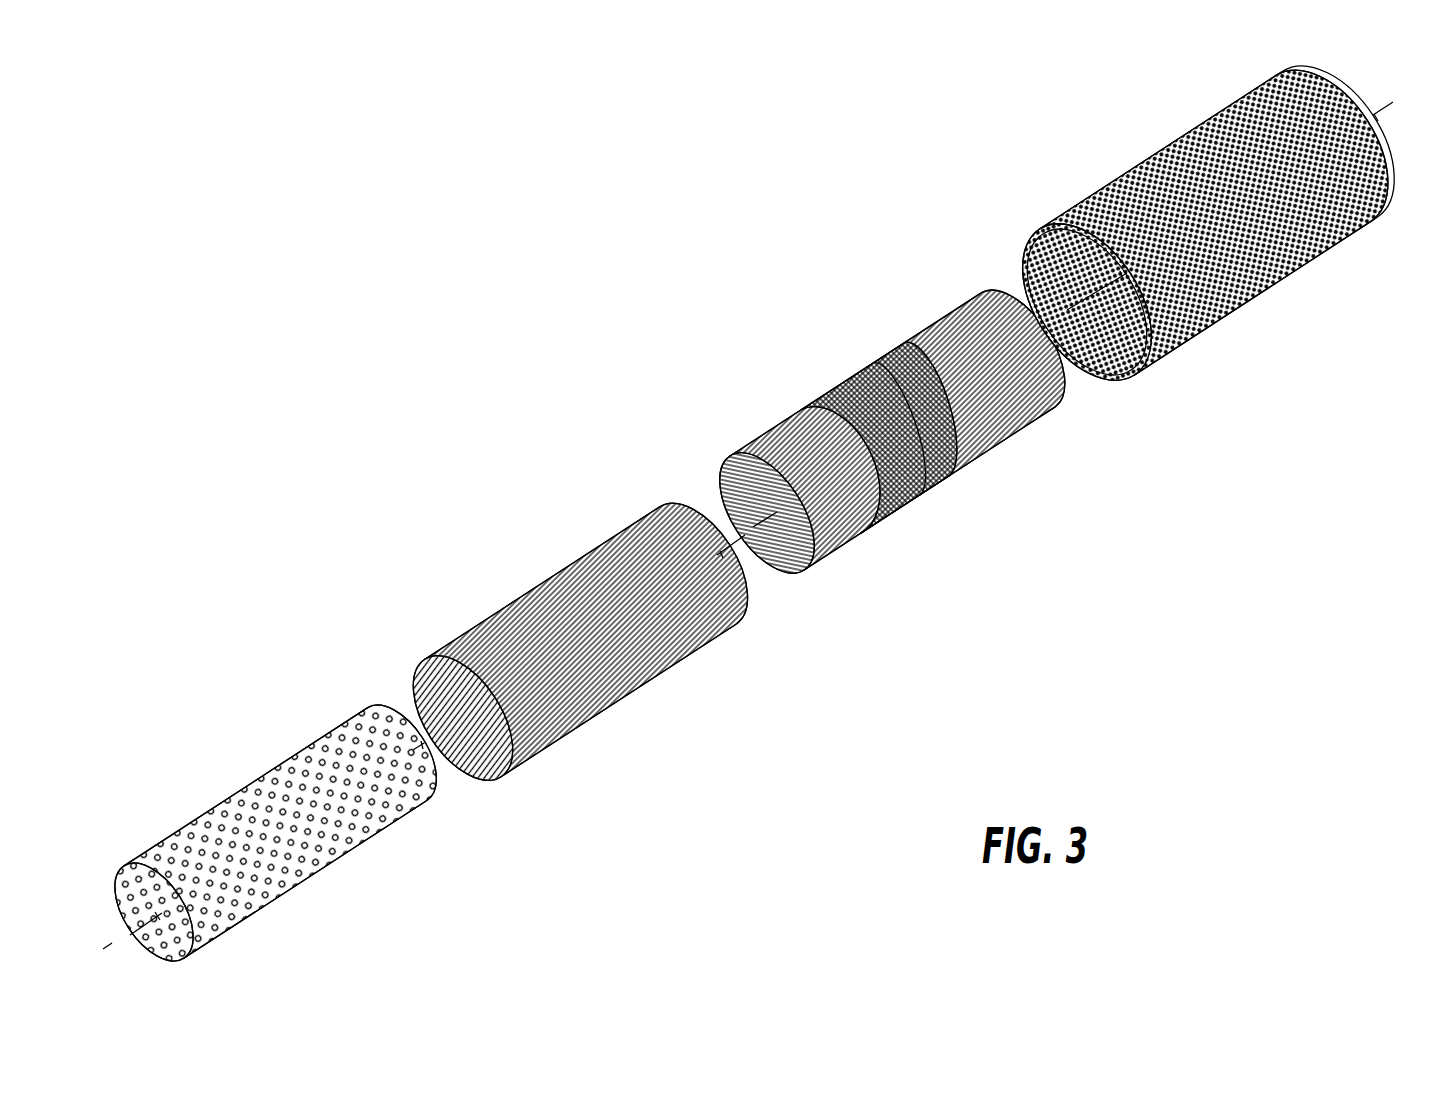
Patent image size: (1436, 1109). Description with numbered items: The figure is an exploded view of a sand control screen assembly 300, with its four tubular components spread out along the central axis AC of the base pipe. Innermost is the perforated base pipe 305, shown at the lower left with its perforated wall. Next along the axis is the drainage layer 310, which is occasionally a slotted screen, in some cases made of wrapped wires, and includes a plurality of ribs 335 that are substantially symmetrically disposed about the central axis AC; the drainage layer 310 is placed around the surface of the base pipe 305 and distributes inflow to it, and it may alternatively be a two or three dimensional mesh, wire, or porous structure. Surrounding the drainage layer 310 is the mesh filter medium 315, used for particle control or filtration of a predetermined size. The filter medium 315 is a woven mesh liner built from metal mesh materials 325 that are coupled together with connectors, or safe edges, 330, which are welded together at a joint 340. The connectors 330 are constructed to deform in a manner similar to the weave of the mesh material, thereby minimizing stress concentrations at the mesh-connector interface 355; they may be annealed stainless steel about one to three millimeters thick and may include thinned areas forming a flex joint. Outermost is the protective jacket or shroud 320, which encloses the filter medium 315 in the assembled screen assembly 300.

The sand control screen assembly 300 is at (374, 258).
The perforated base pipe 305 is at (175, 822).
The drainage layer 310 is at (566, 686).
The mesh filter medium 315 is at (861, 435).
The protective jacket or shroud 320 is at (1115, 148).
The metal mesh materials 325 is at (954, 340).
The connectors 330 is at (945, 451).
The ribs 335 is at (476, 762).
The joint 340 is at (922, 498).
The mesh-connector interface 355 is at (877, 361).
The central axis AC is at (759, 527).